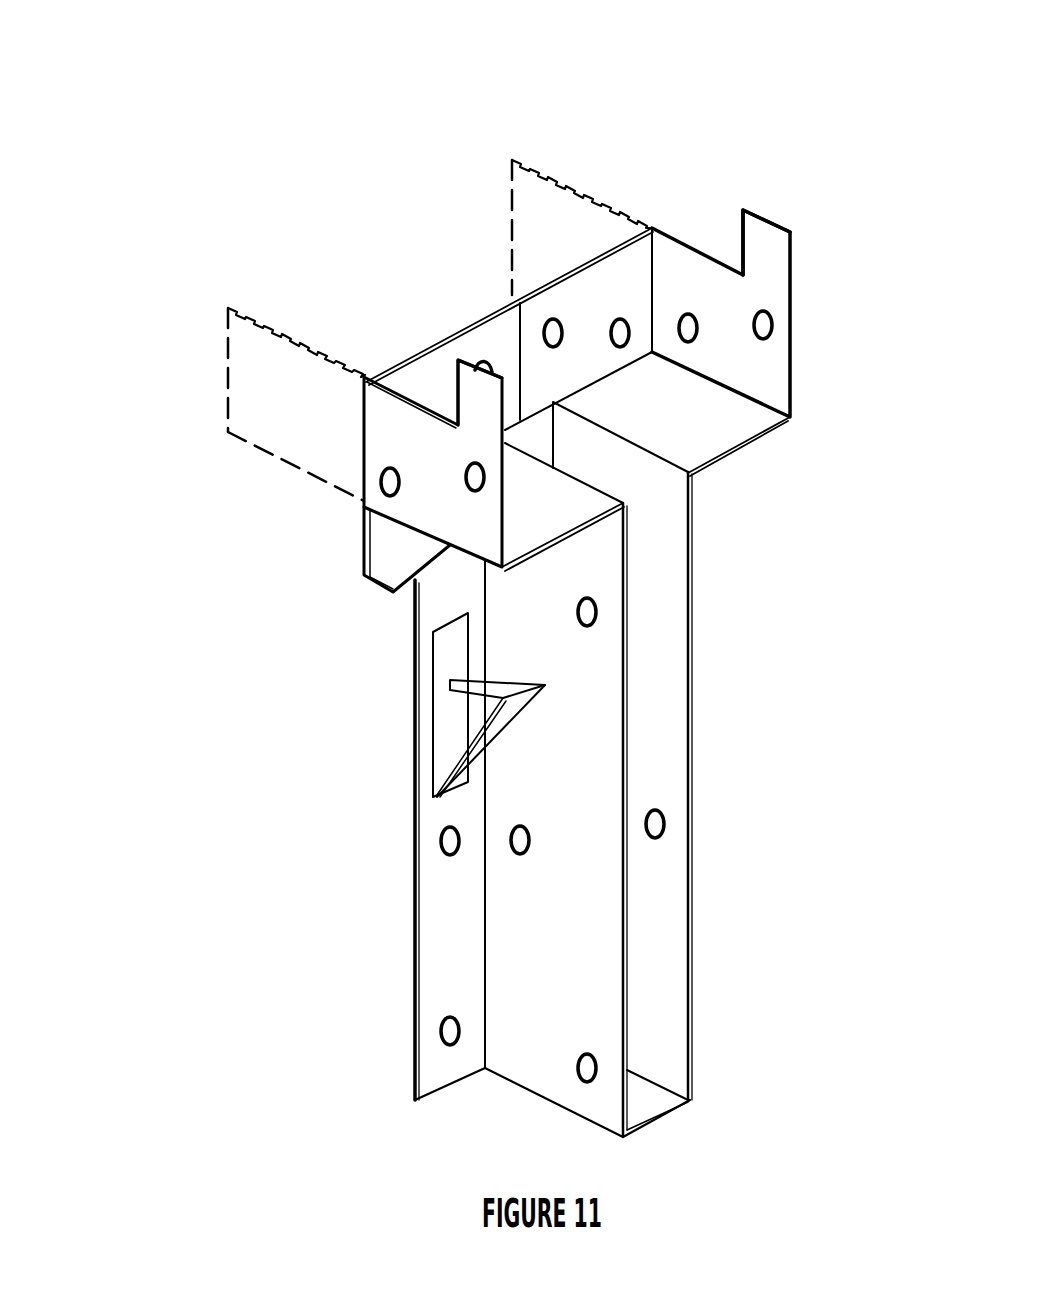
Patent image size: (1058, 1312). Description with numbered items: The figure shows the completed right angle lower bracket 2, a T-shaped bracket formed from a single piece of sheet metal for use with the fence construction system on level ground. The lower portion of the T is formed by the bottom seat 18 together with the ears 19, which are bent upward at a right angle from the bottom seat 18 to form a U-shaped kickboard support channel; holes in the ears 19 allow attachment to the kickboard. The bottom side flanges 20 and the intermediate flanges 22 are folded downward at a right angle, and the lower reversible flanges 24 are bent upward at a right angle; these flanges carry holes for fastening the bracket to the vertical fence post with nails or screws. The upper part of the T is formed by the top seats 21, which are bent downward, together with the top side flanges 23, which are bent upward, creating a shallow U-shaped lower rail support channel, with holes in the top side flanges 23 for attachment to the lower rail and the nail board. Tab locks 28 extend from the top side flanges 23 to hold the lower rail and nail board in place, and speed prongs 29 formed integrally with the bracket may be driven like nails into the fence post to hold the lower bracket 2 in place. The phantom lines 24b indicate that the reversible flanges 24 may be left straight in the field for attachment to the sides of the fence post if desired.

The right angle lower bracket 2 is at (838, 146).
The bottom seat 18 is at (647, 1122).
The ears 19 is at (630, 863).
The bottom side flanges 20 is at (405, 740).
The top seats 21 is at (550, 555).
The intermediate flanges 22 is at (357, 545).
The top side flanges 23 is at (808, 360).
The lower reversible flanges 24 is at (512, 293).
The phantom lines 24b is at (230, 298).
The tab locks 28 is at (797, 263).
The speed prongs 29 is at (472, 700).